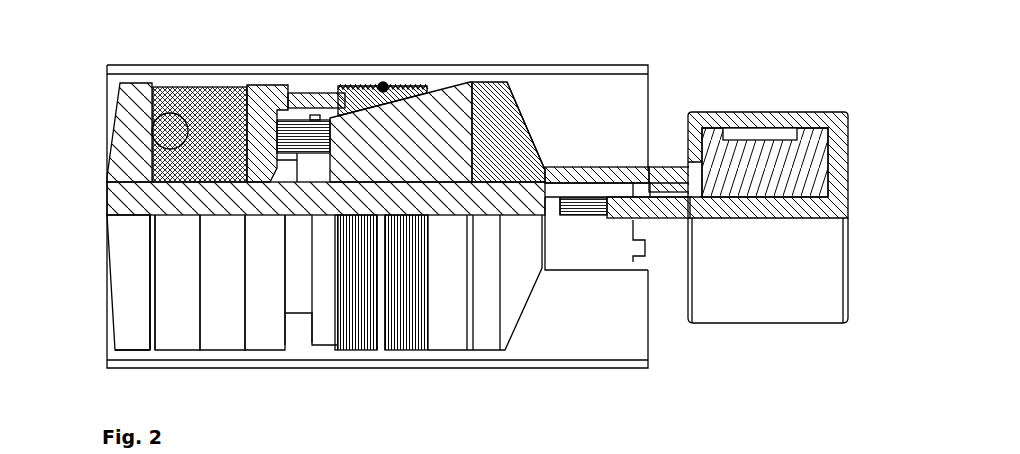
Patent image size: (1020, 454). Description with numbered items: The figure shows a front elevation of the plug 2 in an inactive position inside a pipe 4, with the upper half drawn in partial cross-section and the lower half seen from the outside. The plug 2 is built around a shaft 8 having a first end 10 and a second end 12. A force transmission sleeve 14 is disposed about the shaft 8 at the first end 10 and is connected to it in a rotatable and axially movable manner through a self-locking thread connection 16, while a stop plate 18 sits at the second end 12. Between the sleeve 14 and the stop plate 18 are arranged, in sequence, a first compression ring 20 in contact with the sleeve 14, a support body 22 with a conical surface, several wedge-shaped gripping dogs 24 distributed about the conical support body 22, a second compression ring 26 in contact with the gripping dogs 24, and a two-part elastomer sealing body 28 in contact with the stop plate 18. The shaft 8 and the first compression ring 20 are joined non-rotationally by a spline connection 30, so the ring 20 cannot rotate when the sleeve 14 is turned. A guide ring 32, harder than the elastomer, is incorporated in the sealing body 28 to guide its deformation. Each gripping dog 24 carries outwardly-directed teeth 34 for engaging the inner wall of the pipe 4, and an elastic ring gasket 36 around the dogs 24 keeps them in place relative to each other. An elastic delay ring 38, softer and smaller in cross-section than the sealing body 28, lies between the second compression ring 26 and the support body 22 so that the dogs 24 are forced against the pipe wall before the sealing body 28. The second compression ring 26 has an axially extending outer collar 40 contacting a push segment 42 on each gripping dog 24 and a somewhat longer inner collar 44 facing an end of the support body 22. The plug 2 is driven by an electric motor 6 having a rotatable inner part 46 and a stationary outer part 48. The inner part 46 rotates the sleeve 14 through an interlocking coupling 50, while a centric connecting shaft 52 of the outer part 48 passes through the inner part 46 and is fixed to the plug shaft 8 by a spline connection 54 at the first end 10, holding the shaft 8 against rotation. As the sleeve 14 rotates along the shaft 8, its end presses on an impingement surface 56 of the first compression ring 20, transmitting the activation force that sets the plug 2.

The plug 2 is at (92, 216).
The pipe 4 is at (632, 72).
The electric motor 6 is at (810, 300).
The shaft 8 is at (238, 197).
The first end 10 is at (620, 190).
The second end 12 is at (178, 197).
The force transmission sleeve 14 is at (557, 174).
The thread connection 16 is at (552, 200).
The stop plate 18 is at (128, 114).
The first compression ring 20 is at (498, 98).
The support body 22 is at (462, 98).
The gripping dogs 24 is at (417, 90).
The second compression ring 26 is at (257, 88).
The sealing body 28 is at (207, 103).
The spline connection 30 is at (470, 160).
The guide ring 32 is at (172, 118).
The teeth 34 is at (355, 87).
The ring gasket 36 is at (385, 84).
The delay ring 38 is at (315, 165).
The outer collar 40 is at (290, 93).
The push segment 42 is at (316, 118).
The inner collar 44 is at (300, 180).
The rotatable inner part 46 is at (733, 155).
The stationary outer part 48 is at (818, 112).
The interlocking coupling 50 is at (648, 190).
The connecting shaft 52 is at (665, 212).
The spline connection 54 is at (588, 212).
The impingement surface 56 is at (518, 168).